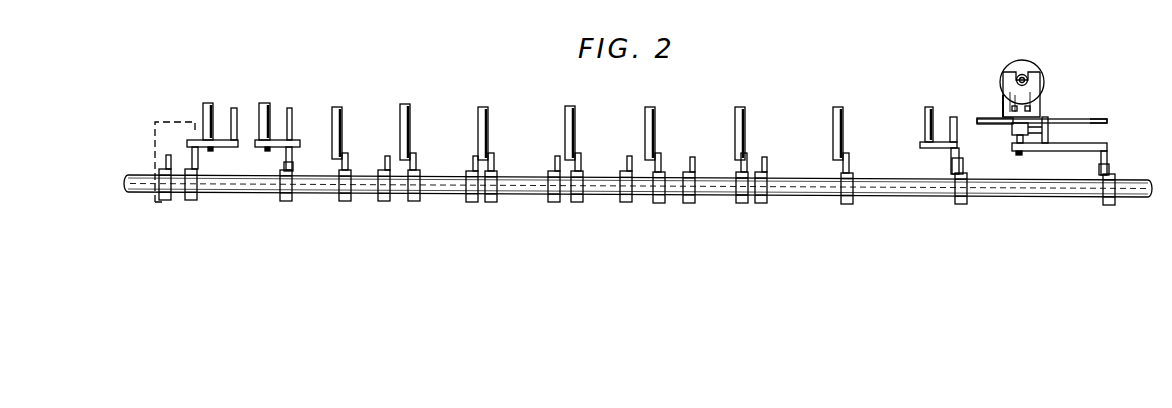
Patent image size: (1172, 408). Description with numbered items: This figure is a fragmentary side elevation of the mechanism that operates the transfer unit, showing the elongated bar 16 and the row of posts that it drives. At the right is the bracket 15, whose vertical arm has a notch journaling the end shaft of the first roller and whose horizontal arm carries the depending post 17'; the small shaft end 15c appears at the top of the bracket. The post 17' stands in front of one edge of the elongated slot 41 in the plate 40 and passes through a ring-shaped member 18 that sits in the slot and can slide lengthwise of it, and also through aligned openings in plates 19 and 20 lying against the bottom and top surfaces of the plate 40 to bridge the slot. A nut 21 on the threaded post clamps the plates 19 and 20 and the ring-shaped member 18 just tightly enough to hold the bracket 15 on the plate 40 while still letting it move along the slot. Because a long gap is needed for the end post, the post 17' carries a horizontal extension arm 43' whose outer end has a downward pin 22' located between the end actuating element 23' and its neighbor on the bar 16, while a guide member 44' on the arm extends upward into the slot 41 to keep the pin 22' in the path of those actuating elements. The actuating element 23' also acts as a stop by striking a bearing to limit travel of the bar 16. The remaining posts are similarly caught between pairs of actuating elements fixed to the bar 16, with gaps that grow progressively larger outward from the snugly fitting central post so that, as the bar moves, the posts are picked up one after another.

The bracket 15 is at (1008, 70).
The motor shaft 15c is at (1030, 80).
The elongated bar 16 is at (803, 194).
The post 17' is at (1003, 153).
The ring-shaped member 18 is at (993, 118).
The plate 19 is at (1050, 132).
The plate 20 is at (1010, 110).
The nut 21 is at (1011, 129).
The pin 22' is at (1087, 200).
The actuating element 23' is at (1130, 206).
The plate 40 is at (1104, 121).
The slot 41 is at (1066, 117).
The extension arm 43' is at (1059, 159).
The guide member 44' is at (1059, 116).